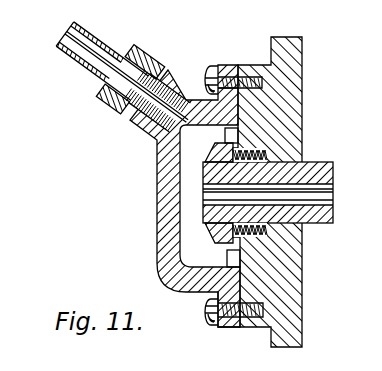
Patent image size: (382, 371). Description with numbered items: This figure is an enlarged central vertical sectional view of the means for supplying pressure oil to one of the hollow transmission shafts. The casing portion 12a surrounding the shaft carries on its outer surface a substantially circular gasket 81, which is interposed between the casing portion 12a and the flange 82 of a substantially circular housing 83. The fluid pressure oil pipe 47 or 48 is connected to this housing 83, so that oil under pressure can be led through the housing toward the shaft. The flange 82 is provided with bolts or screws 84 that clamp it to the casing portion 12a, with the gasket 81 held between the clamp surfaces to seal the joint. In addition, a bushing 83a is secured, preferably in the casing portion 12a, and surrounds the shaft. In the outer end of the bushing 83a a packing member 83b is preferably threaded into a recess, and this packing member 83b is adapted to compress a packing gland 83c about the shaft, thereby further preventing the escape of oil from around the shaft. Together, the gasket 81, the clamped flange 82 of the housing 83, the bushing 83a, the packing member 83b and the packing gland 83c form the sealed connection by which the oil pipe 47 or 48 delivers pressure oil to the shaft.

The casing portion 12a is at (294, 313).
The fluid pressure oil pipe 47 is at (78, 57).
The fluid pressure oil pipe 48 is at (103, 109).
The gasket 81 is at (240, 323).
The flange 82 is at (222, 323).
The housing 83 is at (162, 222).
The bushing 83a is at (299, 147).
The packing member 83b is at (223, 157).
The packing gland 83c is at (270, 158).
The bolts or screws 84 is at (208, 308).